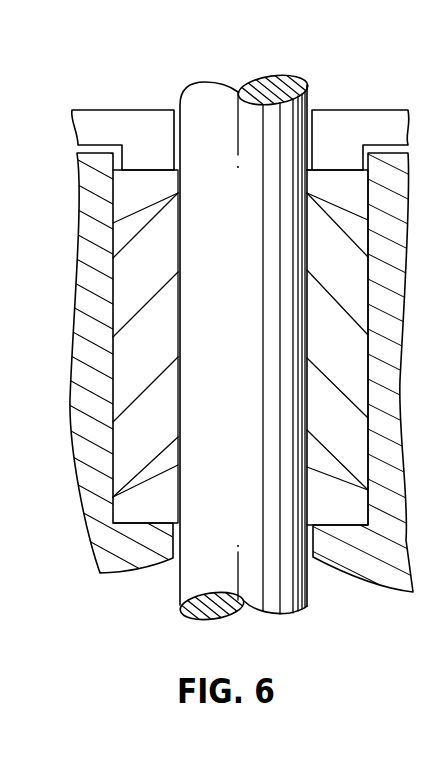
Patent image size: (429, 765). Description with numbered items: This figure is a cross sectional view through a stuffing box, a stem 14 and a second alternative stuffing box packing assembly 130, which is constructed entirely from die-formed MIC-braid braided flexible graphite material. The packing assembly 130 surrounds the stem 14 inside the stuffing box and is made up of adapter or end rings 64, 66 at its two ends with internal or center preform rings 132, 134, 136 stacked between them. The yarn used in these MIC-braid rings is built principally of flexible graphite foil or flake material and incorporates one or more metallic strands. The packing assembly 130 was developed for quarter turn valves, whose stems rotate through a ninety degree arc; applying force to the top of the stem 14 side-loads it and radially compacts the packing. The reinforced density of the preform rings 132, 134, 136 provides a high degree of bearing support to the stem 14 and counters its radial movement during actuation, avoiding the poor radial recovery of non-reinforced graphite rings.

The packing assembly 130 is at (182, 72).
The stem 14 is at (295, 73).
The adapter ring 64 is at (128, 193).
The preform ring 132 is at (128, 303).
The preform ring 134 is at (135, 377).
The preform ring 136 is at (132, 448).
The adapter ring 66 is at (125, 503).